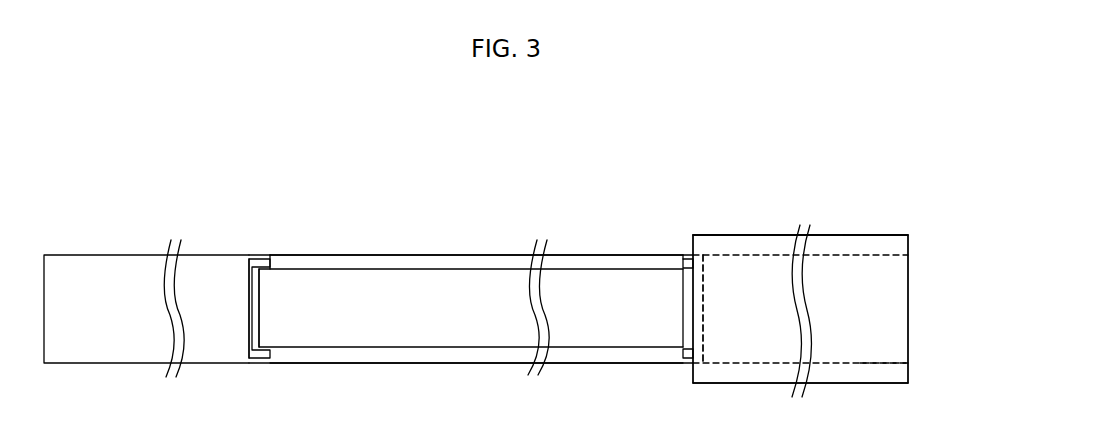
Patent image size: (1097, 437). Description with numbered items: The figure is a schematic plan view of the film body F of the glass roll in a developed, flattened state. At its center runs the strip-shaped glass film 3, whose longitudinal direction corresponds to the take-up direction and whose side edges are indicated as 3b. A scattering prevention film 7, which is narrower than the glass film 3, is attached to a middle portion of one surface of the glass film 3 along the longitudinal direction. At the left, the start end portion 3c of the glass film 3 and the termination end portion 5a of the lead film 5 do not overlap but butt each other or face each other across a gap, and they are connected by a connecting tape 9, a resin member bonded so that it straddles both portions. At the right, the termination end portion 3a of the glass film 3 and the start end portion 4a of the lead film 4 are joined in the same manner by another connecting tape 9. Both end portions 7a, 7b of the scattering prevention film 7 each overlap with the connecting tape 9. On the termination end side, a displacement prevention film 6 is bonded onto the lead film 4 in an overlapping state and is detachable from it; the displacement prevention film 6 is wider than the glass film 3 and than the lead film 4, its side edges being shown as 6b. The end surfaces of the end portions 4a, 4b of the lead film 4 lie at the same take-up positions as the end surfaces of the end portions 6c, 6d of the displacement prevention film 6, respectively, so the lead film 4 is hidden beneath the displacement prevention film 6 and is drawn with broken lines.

The glass film 3 is at (473, 262).
The termination end portion 3a is at (681, 262).
The side wall of tube 3b is at (412, 262).
The start end portion 3c is at (278, 263).
The lead film 4 is at (758, 283).
The start end portion 4a is at (708, 298).
The end portion 4b is at (887, 312).
The lead film 5 is at (127, 283).
The termination end portion 5a is at (245, 307).
The displacement prevention film 6 is at (802, 279).
The side wall of housing 6b is at (836, 236).
The end portion 6c is at (703, 373).
The end portion 6d is at (898, 375).
The scattering prevention film 7 is at (584, 310).
The end portion 7a is at (265, 310).
The end portion 7b is at (688, 310).
The connecting tape 9 is at (254, 258).
The film body F is at (834, 123).